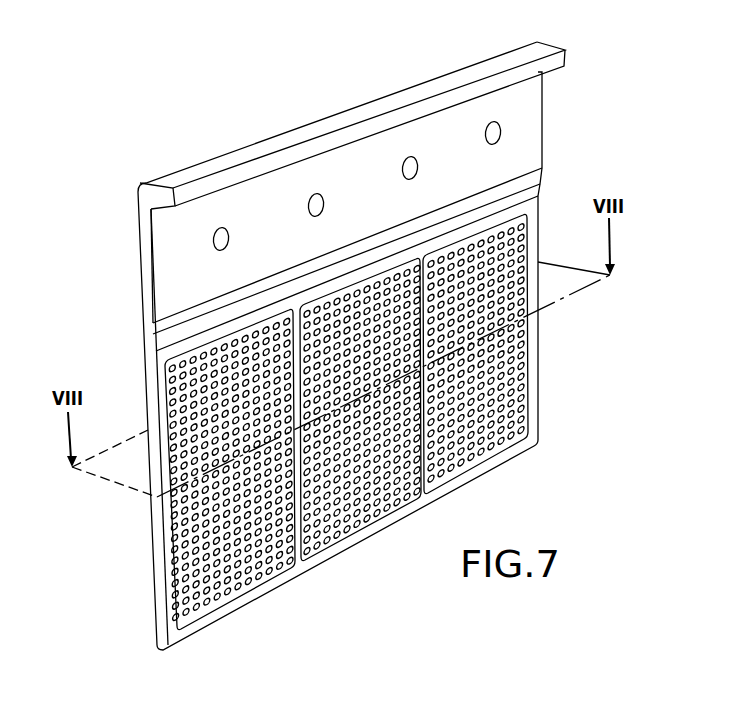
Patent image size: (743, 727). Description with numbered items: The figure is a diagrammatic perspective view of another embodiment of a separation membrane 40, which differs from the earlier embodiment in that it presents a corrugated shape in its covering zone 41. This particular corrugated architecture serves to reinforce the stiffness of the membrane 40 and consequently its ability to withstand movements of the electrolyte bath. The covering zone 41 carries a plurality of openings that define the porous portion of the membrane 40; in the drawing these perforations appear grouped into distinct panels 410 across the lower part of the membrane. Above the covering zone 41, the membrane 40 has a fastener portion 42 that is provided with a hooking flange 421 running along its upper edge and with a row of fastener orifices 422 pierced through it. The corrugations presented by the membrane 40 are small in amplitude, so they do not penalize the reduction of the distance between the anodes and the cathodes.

The separation membrane 40 is at (618, 372).
The covering zone 41 is at (347, 418).
The perforated sub-panel 410 is at (498, 462).
The fastener portion 42 is at (528, 122).
The hooking flange 421 is at (566, 47).
The fastener orifices 422 is at (316, 192).